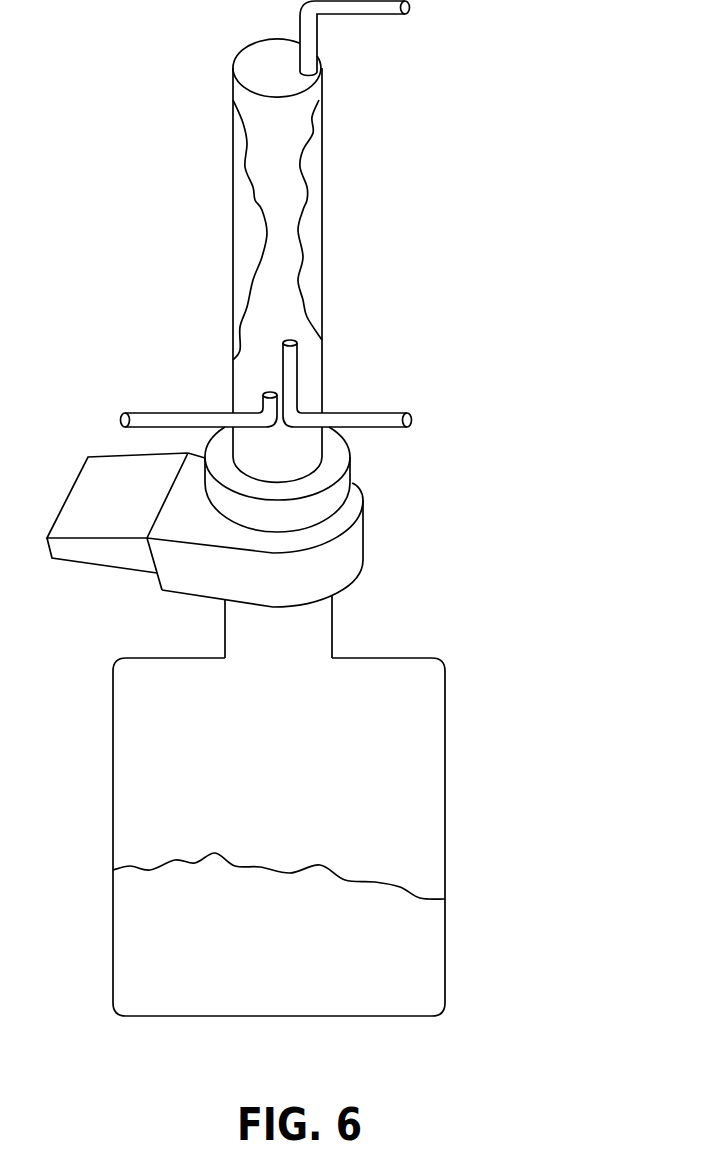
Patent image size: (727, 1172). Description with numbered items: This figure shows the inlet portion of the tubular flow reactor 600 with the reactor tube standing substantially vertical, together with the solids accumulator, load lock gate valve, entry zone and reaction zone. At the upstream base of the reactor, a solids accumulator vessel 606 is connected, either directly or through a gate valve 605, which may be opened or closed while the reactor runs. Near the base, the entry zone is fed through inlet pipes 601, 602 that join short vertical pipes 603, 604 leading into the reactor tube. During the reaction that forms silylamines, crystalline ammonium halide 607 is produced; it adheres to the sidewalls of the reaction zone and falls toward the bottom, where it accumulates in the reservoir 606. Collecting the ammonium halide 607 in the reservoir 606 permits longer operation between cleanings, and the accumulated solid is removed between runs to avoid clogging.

The fluid delivery system 600 is at (184, 133).
The inlet pipe 601 is at (157, 412).
The outlet pipe 602 is at (380, 412).
The vertical pipe 603 is at (270, 393).
The vertical pipe 604 is at (297, 343).
The gate valve 605 is at (340, 570).
The solids accumulator vessel 606 is at (445, 733).
The ammonium halide 607 is at (243, 227).